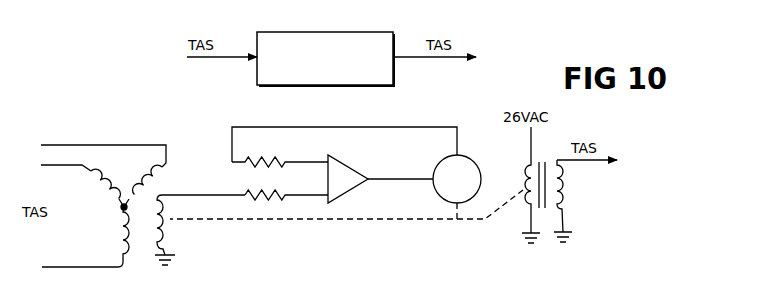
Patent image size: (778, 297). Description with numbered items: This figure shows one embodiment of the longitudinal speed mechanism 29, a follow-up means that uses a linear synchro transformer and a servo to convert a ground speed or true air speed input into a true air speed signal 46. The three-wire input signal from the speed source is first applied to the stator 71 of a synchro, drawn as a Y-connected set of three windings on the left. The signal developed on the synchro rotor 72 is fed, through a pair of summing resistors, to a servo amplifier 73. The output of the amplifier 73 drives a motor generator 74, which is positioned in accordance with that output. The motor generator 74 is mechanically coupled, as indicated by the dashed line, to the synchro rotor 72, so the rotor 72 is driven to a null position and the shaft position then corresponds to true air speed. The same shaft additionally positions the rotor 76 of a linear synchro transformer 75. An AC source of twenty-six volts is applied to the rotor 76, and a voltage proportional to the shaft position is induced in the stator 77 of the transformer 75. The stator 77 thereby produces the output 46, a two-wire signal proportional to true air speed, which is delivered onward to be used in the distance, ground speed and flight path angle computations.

The longitudinal speed mechanism 29 is at (372, 31).
The true air speed signal 46 is at (420, 58).
The stator 71 is at (112, 210).
The synchro rotor 72 is at (168, 224).
The servo amplifier 73 is at (348, 166).
The motor generator 74 is at (473, 161).
The linear synchro transformer 75 is at (543, 185).
The rotor 76 is at (524, 190).
The stator 77 is at (565, 190).